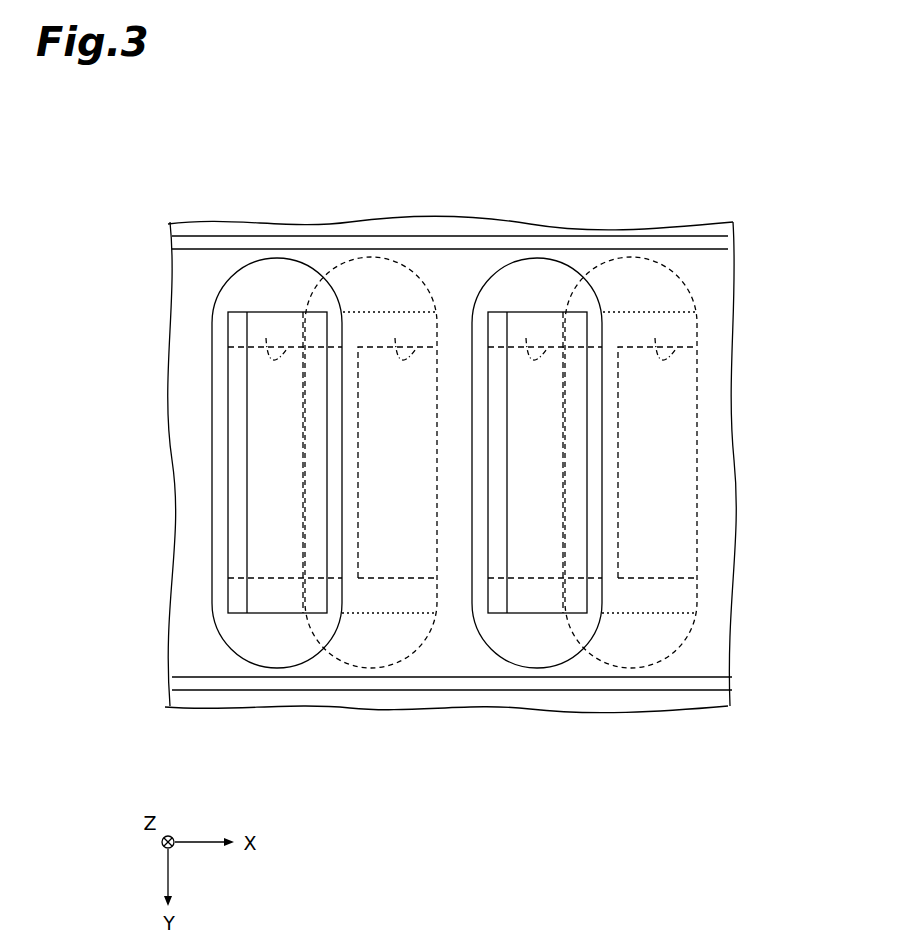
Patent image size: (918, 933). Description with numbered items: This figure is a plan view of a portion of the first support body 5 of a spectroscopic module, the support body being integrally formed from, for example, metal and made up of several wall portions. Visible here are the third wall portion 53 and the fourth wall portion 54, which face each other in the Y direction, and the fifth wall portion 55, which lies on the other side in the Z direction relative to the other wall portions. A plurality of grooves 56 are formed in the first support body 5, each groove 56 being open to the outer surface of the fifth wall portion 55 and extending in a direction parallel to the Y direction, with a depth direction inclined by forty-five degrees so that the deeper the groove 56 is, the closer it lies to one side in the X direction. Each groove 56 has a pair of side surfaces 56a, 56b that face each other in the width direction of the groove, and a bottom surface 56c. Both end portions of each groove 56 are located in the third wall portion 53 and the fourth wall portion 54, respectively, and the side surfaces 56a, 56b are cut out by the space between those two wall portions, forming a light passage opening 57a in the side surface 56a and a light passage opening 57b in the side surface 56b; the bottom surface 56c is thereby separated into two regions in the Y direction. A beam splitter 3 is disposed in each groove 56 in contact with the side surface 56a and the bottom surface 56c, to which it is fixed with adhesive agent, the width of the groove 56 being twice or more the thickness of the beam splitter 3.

The beam splitter 3 is at (293, 602).
The first support body 5 is at (716, 227).
The third wall portion 53 is at (713, 242).
The fourth wall portion 54 is at (713, 685).
The fifth wall portion 55 is at (715, 449).
The groove 56 is at (221, 290).
The side surface 56a is at (222, 505).
The side surface 56b is at (350, 508).
The bottom surface 56c is at (325, 300).
The light passage opening 57a is at (267, 338).
The light passage opening 57b is at (396, 338).